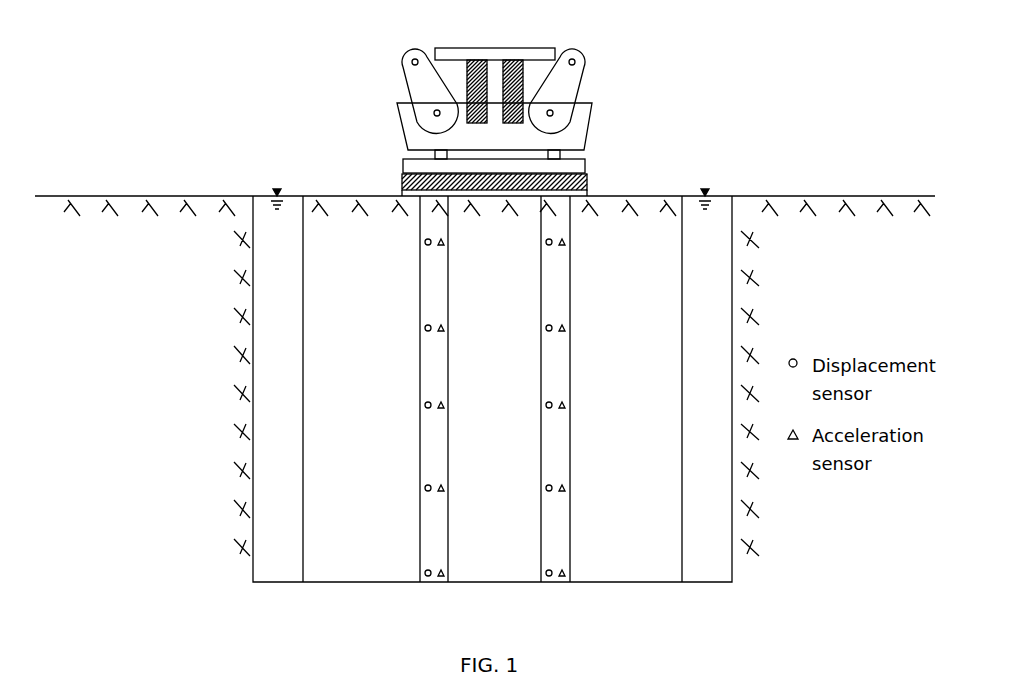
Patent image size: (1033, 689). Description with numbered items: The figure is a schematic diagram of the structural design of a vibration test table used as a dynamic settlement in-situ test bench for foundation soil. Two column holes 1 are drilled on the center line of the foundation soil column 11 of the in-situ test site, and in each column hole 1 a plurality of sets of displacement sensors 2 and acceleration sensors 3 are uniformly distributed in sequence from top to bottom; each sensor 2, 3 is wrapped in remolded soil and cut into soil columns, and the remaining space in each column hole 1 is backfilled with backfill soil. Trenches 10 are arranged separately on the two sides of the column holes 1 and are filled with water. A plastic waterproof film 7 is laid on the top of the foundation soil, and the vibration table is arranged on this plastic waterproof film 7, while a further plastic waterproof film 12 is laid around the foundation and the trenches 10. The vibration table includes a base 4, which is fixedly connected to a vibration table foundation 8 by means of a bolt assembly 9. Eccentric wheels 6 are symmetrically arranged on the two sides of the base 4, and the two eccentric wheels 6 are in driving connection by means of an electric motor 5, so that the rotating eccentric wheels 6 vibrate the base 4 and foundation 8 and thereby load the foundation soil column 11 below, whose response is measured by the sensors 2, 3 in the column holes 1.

The column hole 1 is at (421, 581).
The displacement sensor 2 is at (561, 582).
The acceleration sensor 3 is at (553, 488).
The vibration table base 4 is at (592, 113).
The electric motor 5 is at (515, 97).
The eccentric wheel 6 is at (583, 50).
The plastic waterproof film 7 is at (581, 193).
The vibration table foundation 8 is at (405, 172).
The bolt assembly 9 is at (577, 162).
The trench 10 is at (283, 402).
The foundation soil column 11 is at (365, 230).
The plastic waterproof film 12 is at (302, 545).